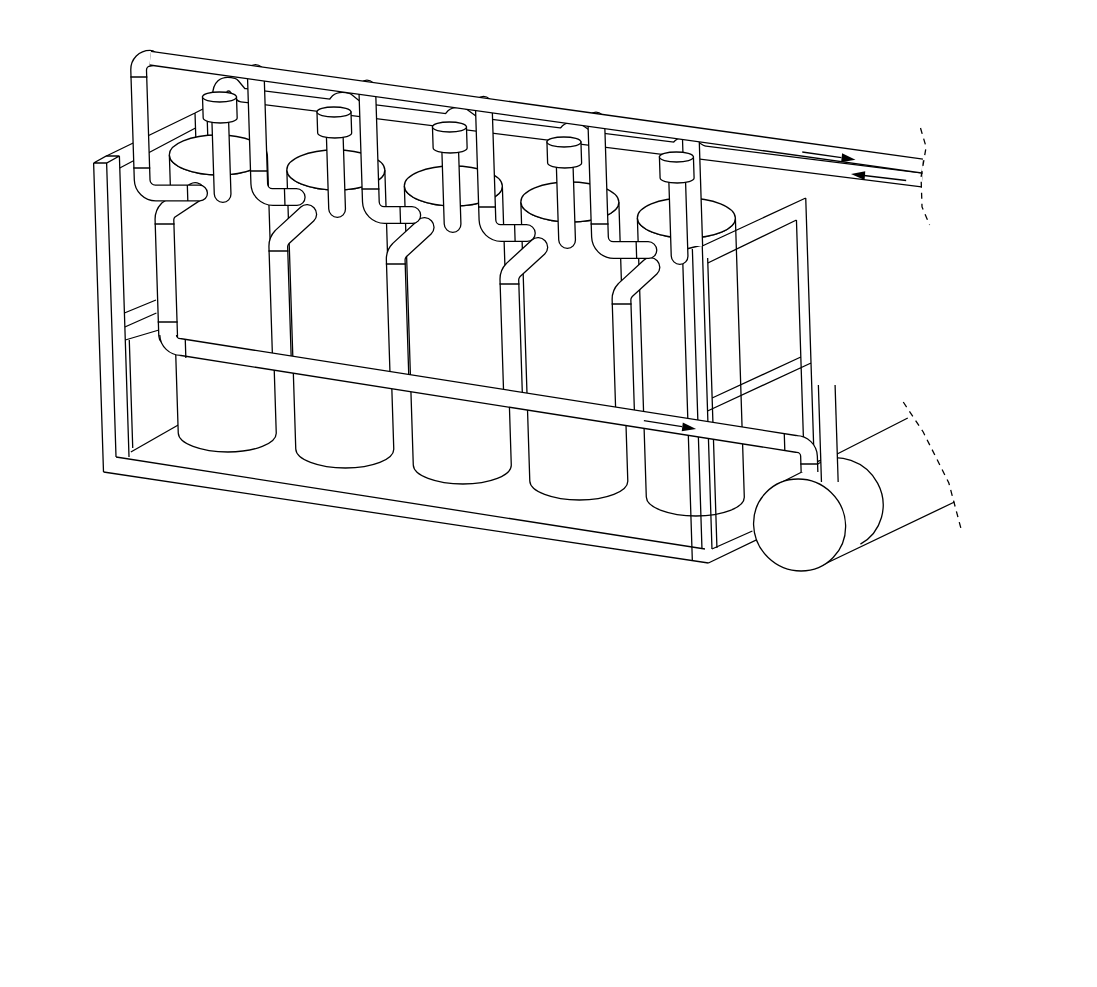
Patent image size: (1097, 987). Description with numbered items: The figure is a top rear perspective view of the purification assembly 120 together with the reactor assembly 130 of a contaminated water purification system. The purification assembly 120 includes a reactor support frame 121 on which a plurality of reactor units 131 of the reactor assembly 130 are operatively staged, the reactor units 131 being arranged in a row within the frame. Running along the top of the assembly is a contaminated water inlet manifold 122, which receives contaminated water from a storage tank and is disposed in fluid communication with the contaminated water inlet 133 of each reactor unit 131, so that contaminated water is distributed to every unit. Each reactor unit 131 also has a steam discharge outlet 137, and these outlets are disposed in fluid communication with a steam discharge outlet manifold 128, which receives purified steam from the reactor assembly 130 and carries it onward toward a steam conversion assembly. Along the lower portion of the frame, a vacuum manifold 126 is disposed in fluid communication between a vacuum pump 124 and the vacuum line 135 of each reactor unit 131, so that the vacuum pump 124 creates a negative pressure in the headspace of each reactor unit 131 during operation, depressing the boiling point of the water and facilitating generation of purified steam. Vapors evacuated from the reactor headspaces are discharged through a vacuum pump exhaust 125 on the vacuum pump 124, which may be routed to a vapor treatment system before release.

The purification assembly 120 is at (511, 486).
The reactor support frame 121 is at (272, 500).
The contaminated water inlet manifold 122 is at (417, 127).
The vacuum pump 124 is at (847, 537).
The vacuum pump exhaust 125 is at (833, 453).
The vacuum manifold 126 is at (440, 399).
The steam discharge outlet manifold 128 is at (538, 113).
The reactor assembly 130 is at (764, 297).
The reactor unit 131 is at (251, 280).
The contaminated water inlet 133 is at (204, 110).
The vacuum line 135 is at (159, 290).
The steam discharge outlet 137 is at (138, 100).